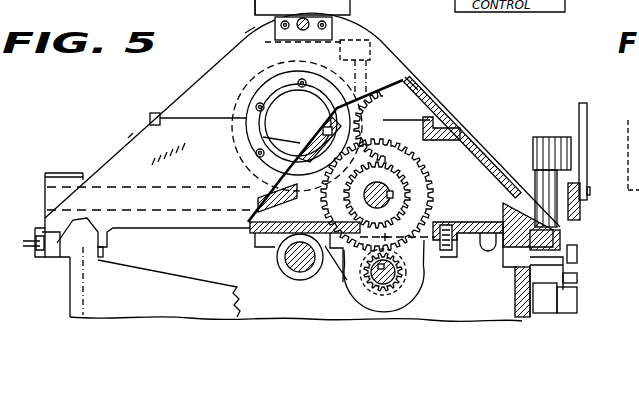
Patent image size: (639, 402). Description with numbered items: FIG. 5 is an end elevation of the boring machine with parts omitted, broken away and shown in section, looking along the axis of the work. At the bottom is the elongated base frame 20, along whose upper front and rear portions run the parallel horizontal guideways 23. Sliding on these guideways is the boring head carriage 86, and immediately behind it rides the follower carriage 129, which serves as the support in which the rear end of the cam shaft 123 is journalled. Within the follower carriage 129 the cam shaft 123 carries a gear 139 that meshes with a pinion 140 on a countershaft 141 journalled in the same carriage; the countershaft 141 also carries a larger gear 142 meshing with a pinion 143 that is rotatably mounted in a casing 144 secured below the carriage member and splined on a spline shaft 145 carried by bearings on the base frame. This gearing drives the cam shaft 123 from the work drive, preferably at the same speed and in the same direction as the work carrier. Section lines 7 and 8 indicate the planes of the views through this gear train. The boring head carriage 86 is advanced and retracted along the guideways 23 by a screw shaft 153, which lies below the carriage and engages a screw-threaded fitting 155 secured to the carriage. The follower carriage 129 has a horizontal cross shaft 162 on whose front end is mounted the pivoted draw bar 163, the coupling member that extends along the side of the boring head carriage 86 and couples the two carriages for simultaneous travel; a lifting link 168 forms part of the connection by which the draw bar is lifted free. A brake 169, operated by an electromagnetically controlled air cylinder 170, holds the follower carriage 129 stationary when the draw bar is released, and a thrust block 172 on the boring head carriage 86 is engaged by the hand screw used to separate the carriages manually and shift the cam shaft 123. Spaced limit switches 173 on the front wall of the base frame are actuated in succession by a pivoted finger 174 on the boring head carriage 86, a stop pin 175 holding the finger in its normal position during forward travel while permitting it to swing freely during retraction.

The section line 7- 7 is at (317, 293).
The section line 8- 8 is at (380, 115).
The base frame 20 is at (145, 278).
The guideways 23 is at (68, 222).
The boring head carriage 86 is at (252, 28).
The cam shaft 123 is at (295, 135).
The follower carriage 129 is at (128, 138).
The gear 139 is at (417, 93).
The pinion 140 is at (403, 156).
The countershaft 141 is at (387, 197).
The larger gear 142 is at (400, 150).
The pinion 143 is at (405, 268).
The casing 144 is at (412, 290).
The spline shaft 145 is at (410, 280).
The screw shaft 153 is at (293, 273).
The screw-threaded fitting 155 is at (277, 260).
The cross shaft 162 is at (257, 247).
The draw bar 163 is at (579, 222).
The lifting link 168 is at (580, 106).
The brake 169 is at (540, 300).
The air cylinder 170 is at (549, 137).
The thrust block 172 is at (257, 8).
The limit switches 173 is at (577, 300).
The pivoted finger 174 is at (577, 276).
The stop pin 175 is at (578, 254).